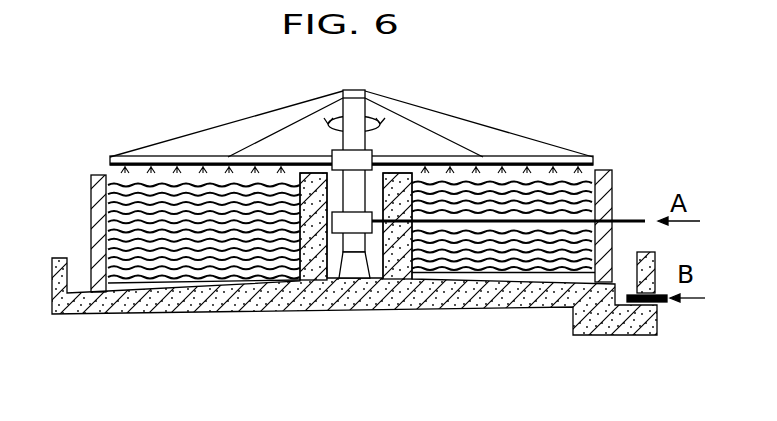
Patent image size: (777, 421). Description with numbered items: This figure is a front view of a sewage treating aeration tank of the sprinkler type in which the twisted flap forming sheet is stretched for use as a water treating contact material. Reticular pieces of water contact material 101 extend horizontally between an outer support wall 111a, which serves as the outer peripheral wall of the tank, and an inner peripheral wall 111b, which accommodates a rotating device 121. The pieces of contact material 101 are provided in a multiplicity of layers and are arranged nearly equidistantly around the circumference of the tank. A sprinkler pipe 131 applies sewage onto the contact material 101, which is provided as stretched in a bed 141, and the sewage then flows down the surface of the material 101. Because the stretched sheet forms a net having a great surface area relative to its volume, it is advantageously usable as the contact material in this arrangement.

The reticular pieces of water contact material 101 is at (140, 183).
The outer support wall 111a is at (612, 172).
The inner peripheral wall 111b is at (392, 172).
The rotating device 121 is at (352, 272).
The sprinkler pipe 131 is at (518, 156).
The bed 141 is at (447, 105).